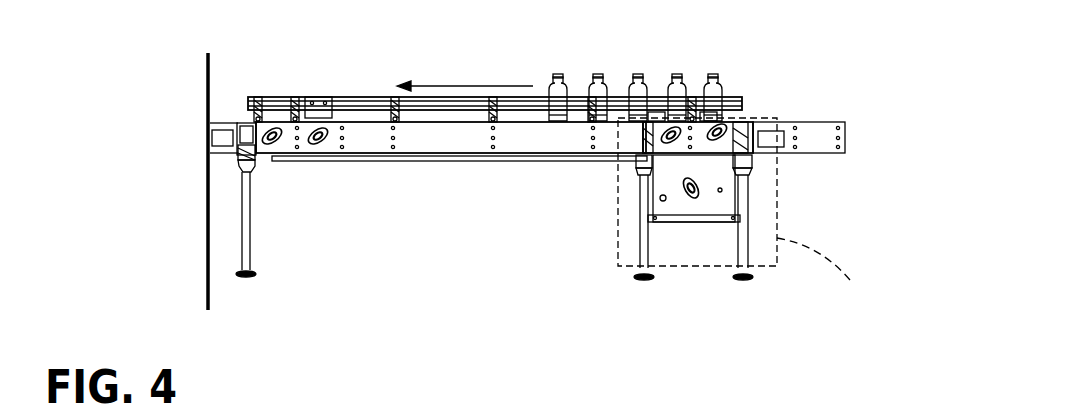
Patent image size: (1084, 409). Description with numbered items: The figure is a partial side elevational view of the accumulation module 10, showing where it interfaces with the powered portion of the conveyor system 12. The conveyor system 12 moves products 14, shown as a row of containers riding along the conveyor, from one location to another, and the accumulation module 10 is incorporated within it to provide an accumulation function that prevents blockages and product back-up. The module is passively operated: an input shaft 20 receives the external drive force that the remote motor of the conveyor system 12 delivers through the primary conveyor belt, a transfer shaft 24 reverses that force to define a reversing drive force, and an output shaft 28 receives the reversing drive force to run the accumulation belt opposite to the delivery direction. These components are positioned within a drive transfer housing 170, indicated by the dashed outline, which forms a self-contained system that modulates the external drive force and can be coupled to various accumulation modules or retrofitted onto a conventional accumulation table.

The accumulation module 10 is at (568, 216).
The conveyor system 12 is at (226, 119).
The products 14 is at (598, 86).
The input shaft 20 is at (726, 126).
The transfer shaft 24 is at (693, 200).
The output shaft 28 is at (668, 138).
The drive transfer housing 170 is at (762, 200).